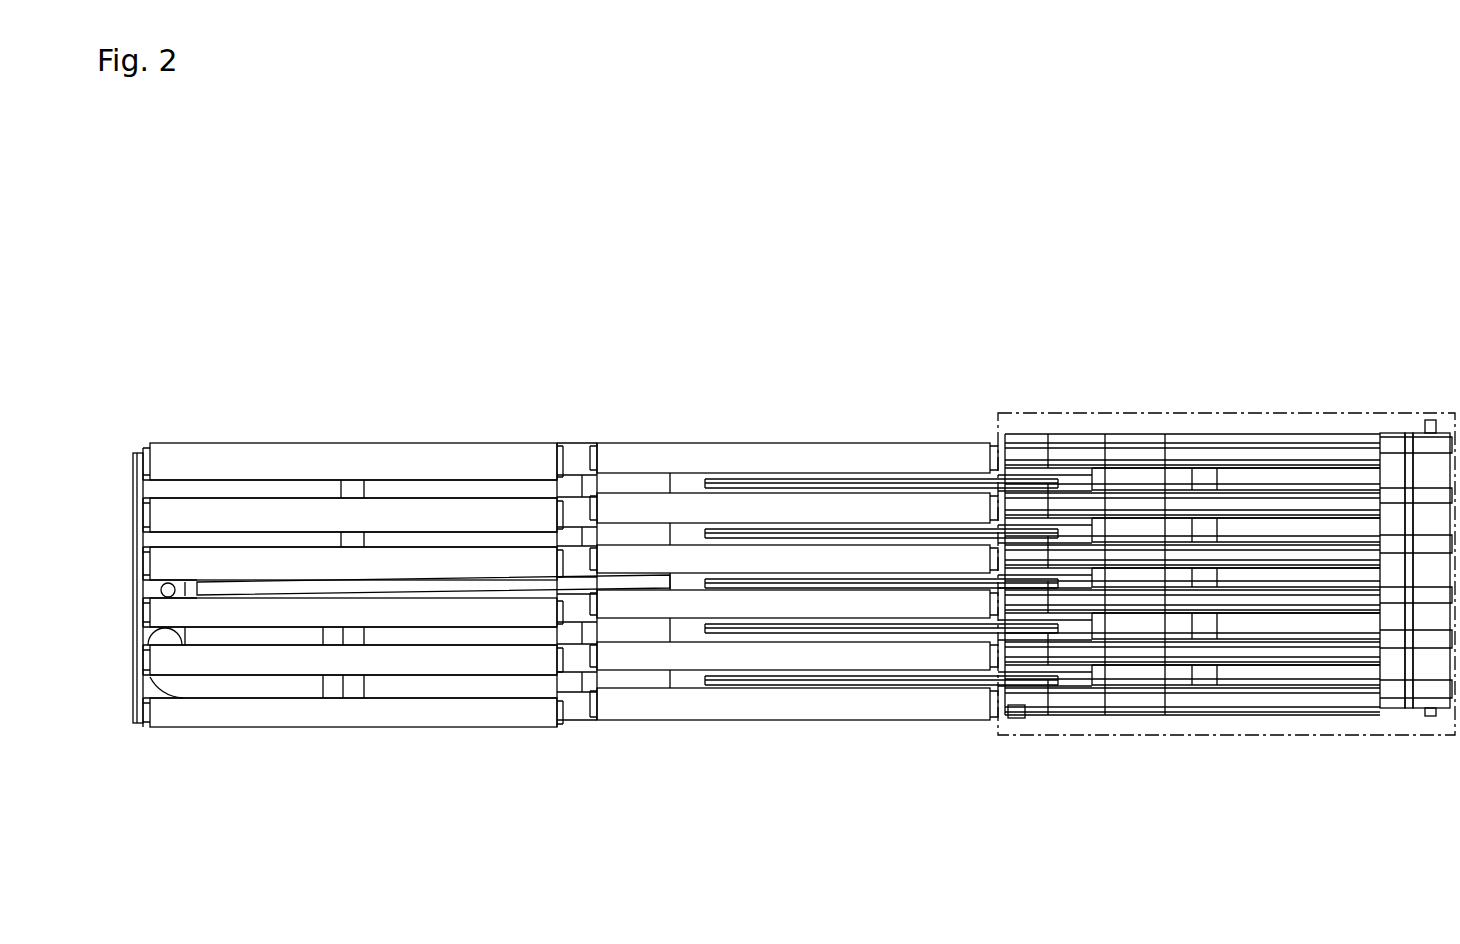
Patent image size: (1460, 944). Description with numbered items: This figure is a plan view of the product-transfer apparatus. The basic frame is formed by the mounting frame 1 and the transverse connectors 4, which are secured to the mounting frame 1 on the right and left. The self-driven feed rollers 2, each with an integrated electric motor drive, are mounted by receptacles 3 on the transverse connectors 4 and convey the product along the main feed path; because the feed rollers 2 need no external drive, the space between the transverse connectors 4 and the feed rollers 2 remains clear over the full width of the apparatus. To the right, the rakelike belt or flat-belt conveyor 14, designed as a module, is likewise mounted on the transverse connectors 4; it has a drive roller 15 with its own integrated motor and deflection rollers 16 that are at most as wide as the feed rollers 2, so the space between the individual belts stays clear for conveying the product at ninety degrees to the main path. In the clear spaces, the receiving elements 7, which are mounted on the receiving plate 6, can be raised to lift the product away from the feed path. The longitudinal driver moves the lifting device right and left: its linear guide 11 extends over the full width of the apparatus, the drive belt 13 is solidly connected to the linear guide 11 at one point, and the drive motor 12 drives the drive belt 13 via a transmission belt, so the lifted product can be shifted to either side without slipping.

The mounting frame 1 is at (132, 483).
The feed rollers 2 is at (515, 460).
The receptacles 3 is at (587, 445).
The transverse connectors 4 is at (580, 703).
The receiving plate 6 is at (683, 533).
The receiving elements 7 is at (720, 483).
The linear guide 11 is at (290, 587).
The drive motor 12 is at (266, 680).
The drive belt 13 is at (1410, 568).
The rakelike belt or flat-belt conveyor 14 is at (1268, 413).
The drive roller 15 is at (1430, 470).
The deflection rollers 16 is at (1017, 717).